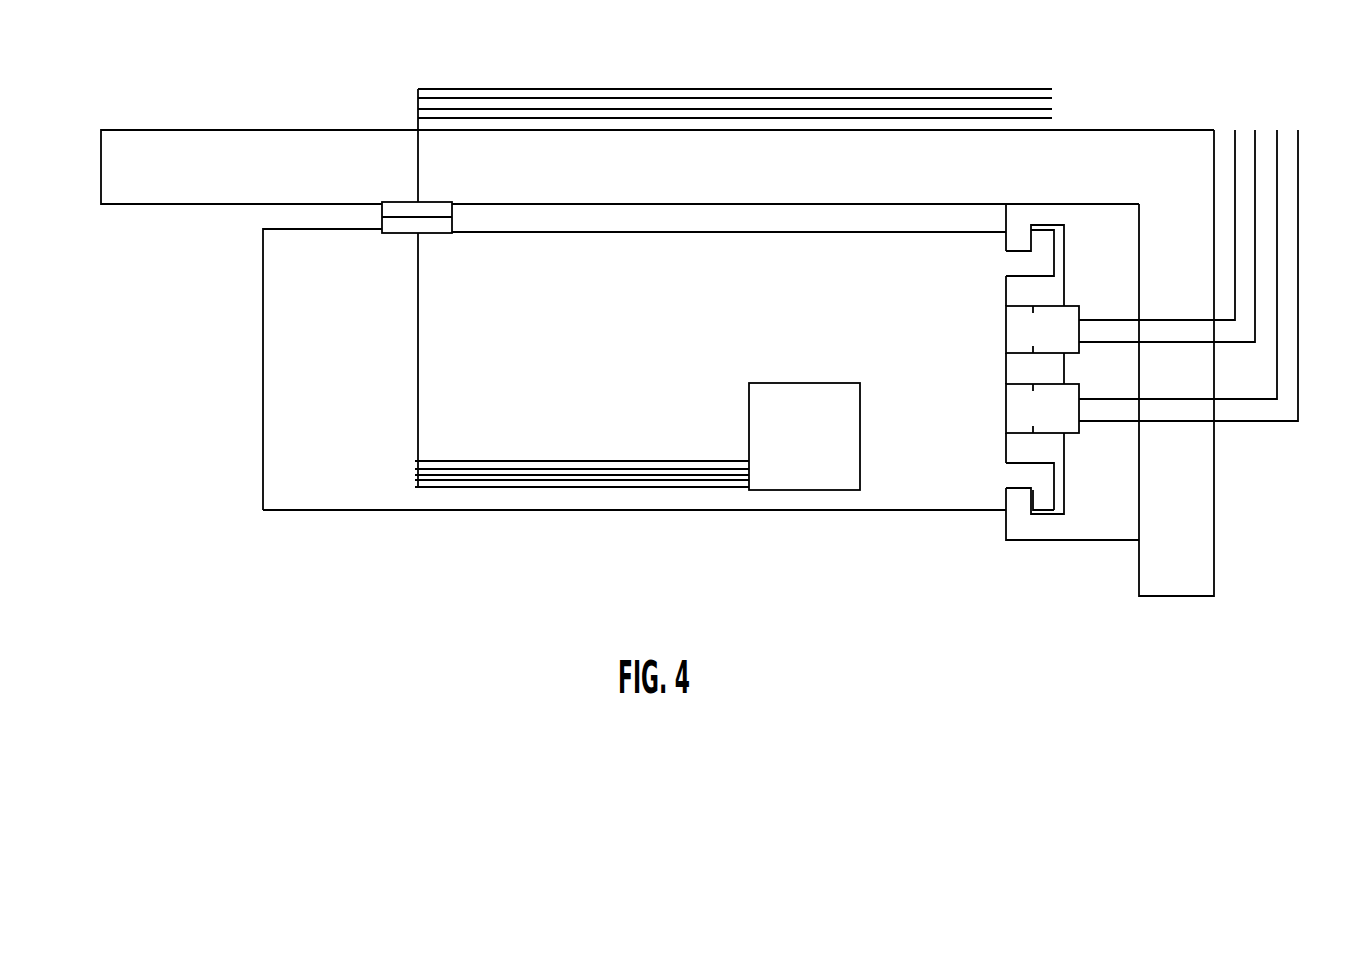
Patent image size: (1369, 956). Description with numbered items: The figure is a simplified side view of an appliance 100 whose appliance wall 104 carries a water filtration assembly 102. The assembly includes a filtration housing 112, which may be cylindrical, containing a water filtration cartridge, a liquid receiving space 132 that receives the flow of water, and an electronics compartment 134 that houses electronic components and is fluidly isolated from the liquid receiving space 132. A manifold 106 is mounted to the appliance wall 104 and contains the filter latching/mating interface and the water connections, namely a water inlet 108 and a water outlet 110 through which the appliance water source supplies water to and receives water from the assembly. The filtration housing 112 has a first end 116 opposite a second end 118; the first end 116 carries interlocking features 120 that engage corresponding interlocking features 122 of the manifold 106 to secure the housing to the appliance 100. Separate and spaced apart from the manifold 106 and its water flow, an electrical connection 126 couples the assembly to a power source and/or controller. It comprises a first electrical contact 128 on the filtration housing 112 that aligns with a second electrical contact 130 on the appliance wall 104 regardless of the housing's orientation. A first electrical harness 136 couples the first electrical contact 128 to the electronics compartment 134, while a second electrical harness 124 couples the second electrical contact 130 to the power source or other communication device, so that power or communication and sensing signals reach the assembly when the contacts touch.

The appliance 100 is at (153, 258).
The water filtration assembly 102 is at (515, 562).
The appliance wall 104 is at (1187, 558).
The manifold 106 is at (1003, 529).
The water inlet 108 is at (1055, 344).
The water outlet 110 is at (1055, 424).
The filtration housing 112 is at (267, 503).
The first end 116 is at (997, 263).
The second end 118 is at (276, 325).
The interlocking features 120 is at (1020, 473).
The corresponding interlocking features 122 is at (1023, 502).
The second electrical harness 124 is at (413, 102).
The electrical connection 126 is at (378, 224).
The first electrical contact 128 is at (418, 236).
The second electrical contact 130 is at (418, 203).
The liquid receiving space 132 is at (530, 273).
The electronics compartment 134 is at (812, 492).
The first electrical harness 136 is at (417, 433).